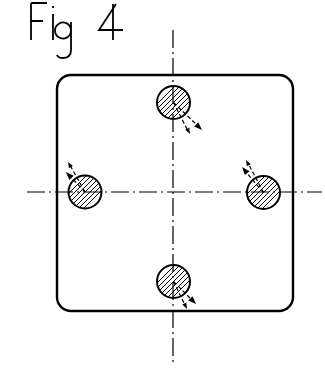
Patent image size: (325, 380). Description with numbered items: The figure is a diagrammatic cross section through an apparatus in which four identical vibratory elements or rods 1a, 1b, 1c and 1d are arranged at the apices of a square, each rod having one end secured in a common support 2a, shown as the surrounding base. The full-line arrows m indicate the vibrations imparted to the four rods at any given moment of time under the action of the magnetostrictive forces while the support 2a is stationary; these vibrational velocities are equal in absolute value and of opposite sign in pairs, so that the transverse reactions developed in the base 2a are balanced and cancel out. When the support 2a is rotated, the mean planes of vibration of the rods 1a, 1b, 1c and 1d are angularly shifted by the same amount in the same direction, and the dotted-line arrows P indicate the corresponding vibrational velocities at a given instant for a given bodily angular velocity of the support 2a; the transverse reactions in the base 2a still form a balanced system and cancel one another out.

The vibratory rod 1a is at (190, 100).
The vibratory rod 1b is at (97, 179).
The vibratory rod 1c is at (186, 268).
The vibratory rod 1d is at (252, 208).
The common support 2a is at (250, 298).
The full-line arrows m is at (33, 174).
The dotted-line arrows P is at (70, 161).